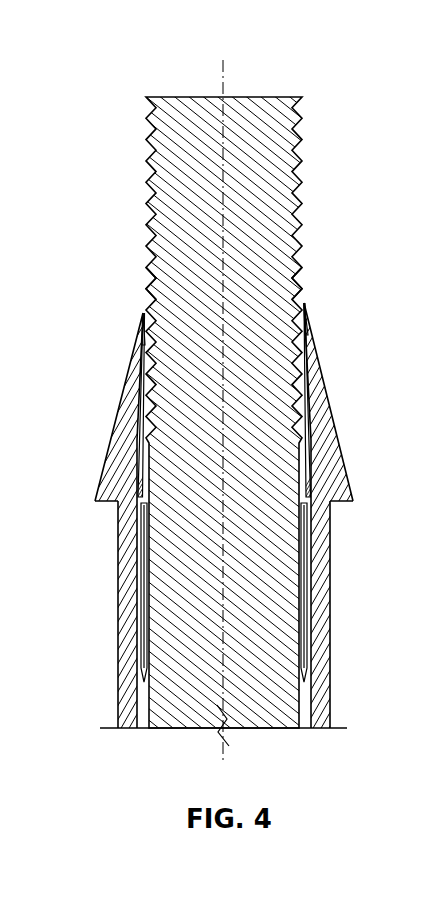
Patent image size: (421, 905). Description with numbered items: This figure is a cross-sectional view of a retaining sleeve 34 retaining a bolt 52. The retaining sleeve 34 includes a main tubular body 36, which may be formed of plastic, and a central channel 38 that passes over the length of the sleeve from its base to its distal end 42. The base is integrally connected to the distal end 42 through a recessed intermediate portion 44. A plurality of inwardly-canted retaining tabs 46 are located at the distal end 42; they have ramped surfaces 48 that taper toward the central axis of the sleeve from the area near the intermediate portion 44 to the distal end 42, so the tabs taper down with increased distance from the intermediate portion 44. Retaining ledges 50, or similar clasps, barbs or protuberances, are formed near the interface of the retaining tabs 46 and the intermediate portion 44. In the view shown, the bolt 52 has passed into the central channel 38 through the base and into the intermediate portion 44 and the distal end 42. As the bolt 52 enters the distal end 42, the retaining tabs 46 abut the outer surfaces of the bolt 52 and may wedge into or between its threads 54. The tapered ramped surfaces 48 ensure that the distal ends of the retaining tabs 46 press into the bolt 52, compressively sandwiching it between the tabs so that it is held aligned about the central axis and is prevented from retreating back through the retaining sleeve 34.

The retaining sleeve 34 is at (210, 512).
The main tubular body 36 is at (331, 690).
The central channel 38 is at (162, 748).
The distal end 42 is at (146, 318).
The recessed intermediate portion 44 is at (118, 661).
The inwardly-canted retaining tabs 46 is at (141, 347).
The ramped surfaces 48 is at (118, 408).
The retaining ledges 50 is at (98, 505).
The bolt 52 is at (309, 162).
The threads 54 is at (145, 279).